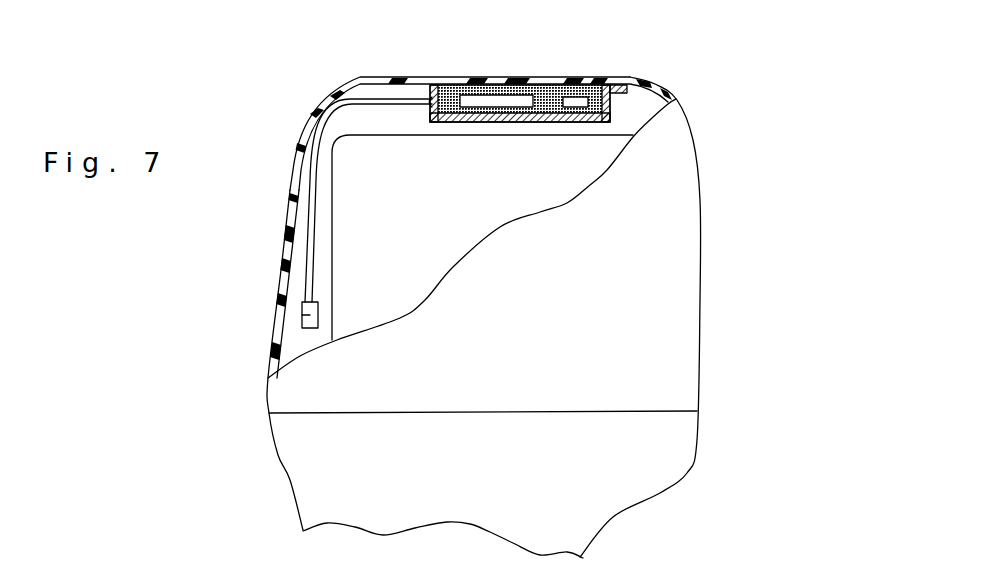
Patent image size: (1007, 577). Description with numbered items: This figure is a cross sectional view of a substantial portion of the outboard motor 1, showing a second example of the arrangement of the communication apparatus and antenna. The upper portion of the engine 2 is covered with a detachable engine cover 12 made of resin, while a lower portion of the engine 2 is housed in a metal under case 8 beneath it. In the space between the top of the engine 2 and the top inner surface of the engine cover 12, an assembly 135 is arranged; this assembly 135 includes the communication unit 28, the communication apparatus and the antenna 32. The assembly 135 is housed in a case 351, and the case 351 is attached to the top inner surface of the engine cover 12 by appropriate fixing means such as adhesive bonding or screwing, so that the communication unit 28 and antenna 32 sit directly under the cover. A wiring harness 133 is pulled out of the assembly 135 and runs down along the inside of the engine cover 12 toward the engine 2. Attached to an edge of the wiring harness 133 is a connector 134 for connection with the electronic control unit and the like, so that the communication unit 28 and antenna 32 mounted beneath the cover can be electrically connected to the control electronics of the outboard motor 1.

The electronic apparatus 1 is at (745, 162).
The engine 2 is at (411, 208).
The under case 8 is at (292, 457).
The engine cover 12 is at (672, 267).
The communication unit 28 is at (500, 92).
The antenna 32 is at (577, 88).
The wiring harness 133 is at (313, 184).
The connector 134 is at (310, 315).
The assembly 135 is at (620, 110).
The case 351 is at (432, 109).